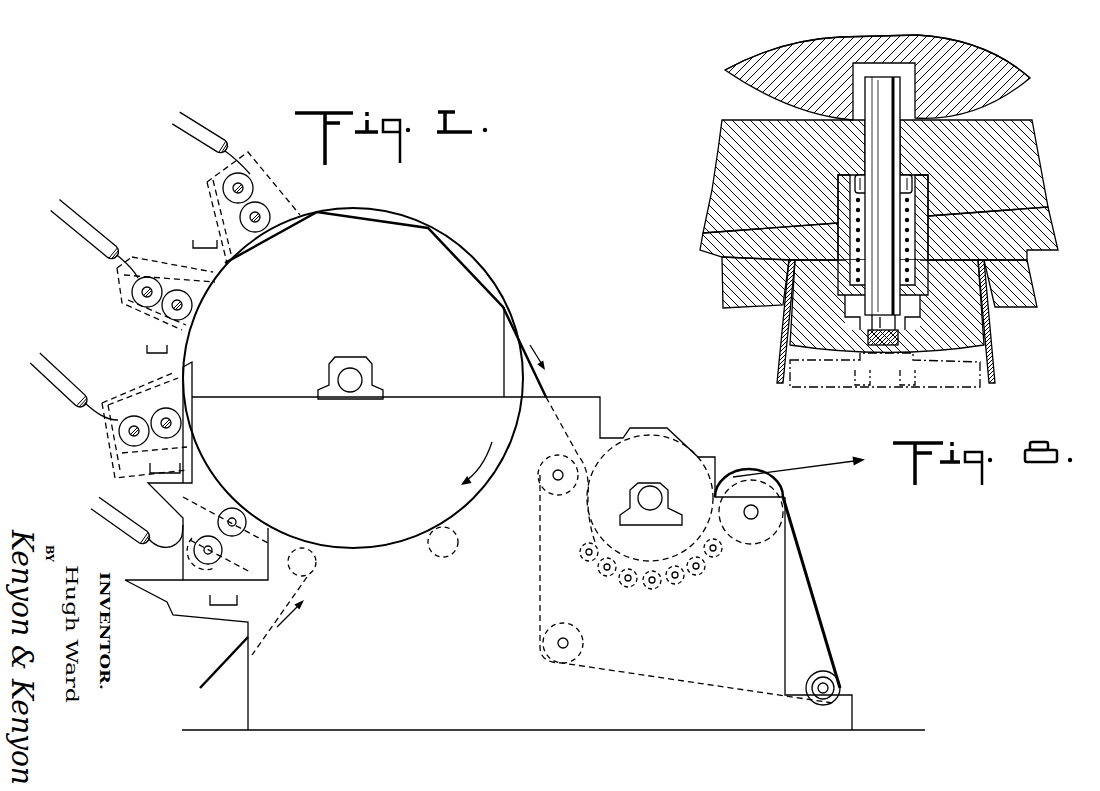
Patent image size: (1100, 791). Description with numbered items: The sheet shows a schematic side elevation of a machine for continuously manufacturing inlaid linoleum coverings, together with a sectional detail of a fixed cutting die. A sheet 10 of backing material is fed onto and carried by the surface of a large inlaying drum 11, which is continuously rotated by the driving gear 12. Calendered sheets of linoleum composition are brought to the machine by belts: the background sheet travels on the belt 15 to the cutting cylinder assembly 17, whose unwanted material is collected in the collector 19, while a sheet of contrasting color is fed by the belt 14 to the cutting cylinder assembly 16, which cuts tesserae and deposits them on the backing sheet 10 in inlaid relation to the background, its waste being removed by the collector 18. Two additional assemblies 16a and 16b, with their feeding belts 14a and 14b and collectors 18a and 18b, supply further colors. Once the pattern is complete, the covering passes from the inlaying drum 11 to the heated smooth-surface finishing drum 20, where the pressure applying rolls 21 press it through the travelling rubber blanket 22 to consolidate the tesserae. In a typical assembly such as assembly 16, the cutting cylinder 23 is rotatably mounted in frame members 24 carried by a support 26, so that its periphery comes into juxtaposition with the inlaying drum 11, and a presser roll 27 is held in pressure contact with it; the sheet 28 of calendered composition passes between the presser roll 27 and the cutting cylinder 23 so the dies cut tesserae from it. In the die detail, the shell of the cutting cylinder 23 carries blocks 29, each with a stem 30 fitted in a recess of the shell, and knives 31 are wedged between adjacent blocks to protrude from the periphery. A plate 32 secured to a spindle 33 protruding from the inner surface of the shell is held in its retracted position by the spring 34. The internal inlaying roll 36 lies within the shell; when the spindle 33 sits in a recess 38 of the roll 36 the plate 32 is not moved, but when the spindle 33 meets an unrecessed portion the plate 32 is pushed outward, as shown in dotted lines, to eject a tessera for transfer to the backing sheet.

In FIG. 1, the sheet of backing material 10 is at (222, 662).
In FIG. 1, the inlaying drum 11 is at (378, 549).
In FIG. 1, the driving gear 12 is at (446, 557).
In FIG. 1, the belt 14 is at (57, 395).
In FIG. 1, the feeding belt 14a is at (85, 252).
In FIG. 1, the feeding belt 14b is at (202, 142).
In FIG. 1, the belt 15 is at (118, 532).
In FIG. 1, the cutting cylinder assembly 16 is at (106, 461).
In FIG. 1, the cutting cylinder assembly 16a is at (117, 296).
In FIG. 1, the cutting cylinder assembly 16b is at (210, 186).
In FIG. 1, the cutting cylinder assembly 17 is at (190, 548).
In FIG. 1, the collector 18 is at (160, 478).
In FIG. 1, the collector 18a is at (147, 350).
In FIG. 1, the collector 18b is at (193, 246).
In FIG. 1, the collector 19 is at (222, 610).
In FIG. 1, the smooth-surface finishing drum 20 is at (682, 455).
In FIG. 1, the pressure applying rolls 21 is at (698, 580).
In FIG. 1, the travelling rubber blanket 22 is at (816, 589).
In FIG. 1, the cutting cylinder 23 is at (181, 423).
In FIG. 8, the cutting cylinder 23 is at (1036, 178).
In FIG. 1, the frame members 24 is at (132, 388).
In FIG. 1, the support 26 is at (417, 236).
In FIG. 1, the presser roll 27 is at (135, 416).
In FIG. 1, the sheet of calendered linoleum composition 28 is at (93, 424).
In FIG. 8, the blocks 29 is at (775, 305).
In FIG. 8, the stem 30 is at (710, 233).
In FIG. 8, the knives 31 is at (990, 348).
In FIG. 8, the plate 32 is at (985, 328).
In FIG. 8, the spindle 33 is at (905, 126).
In FIG. 8, the spring 34 is at (903, 213).
In FIG. 8, the internal inlaying roll 36 is at (740, 80).
In FIG. 8, the recess 38 is at (983, 56).